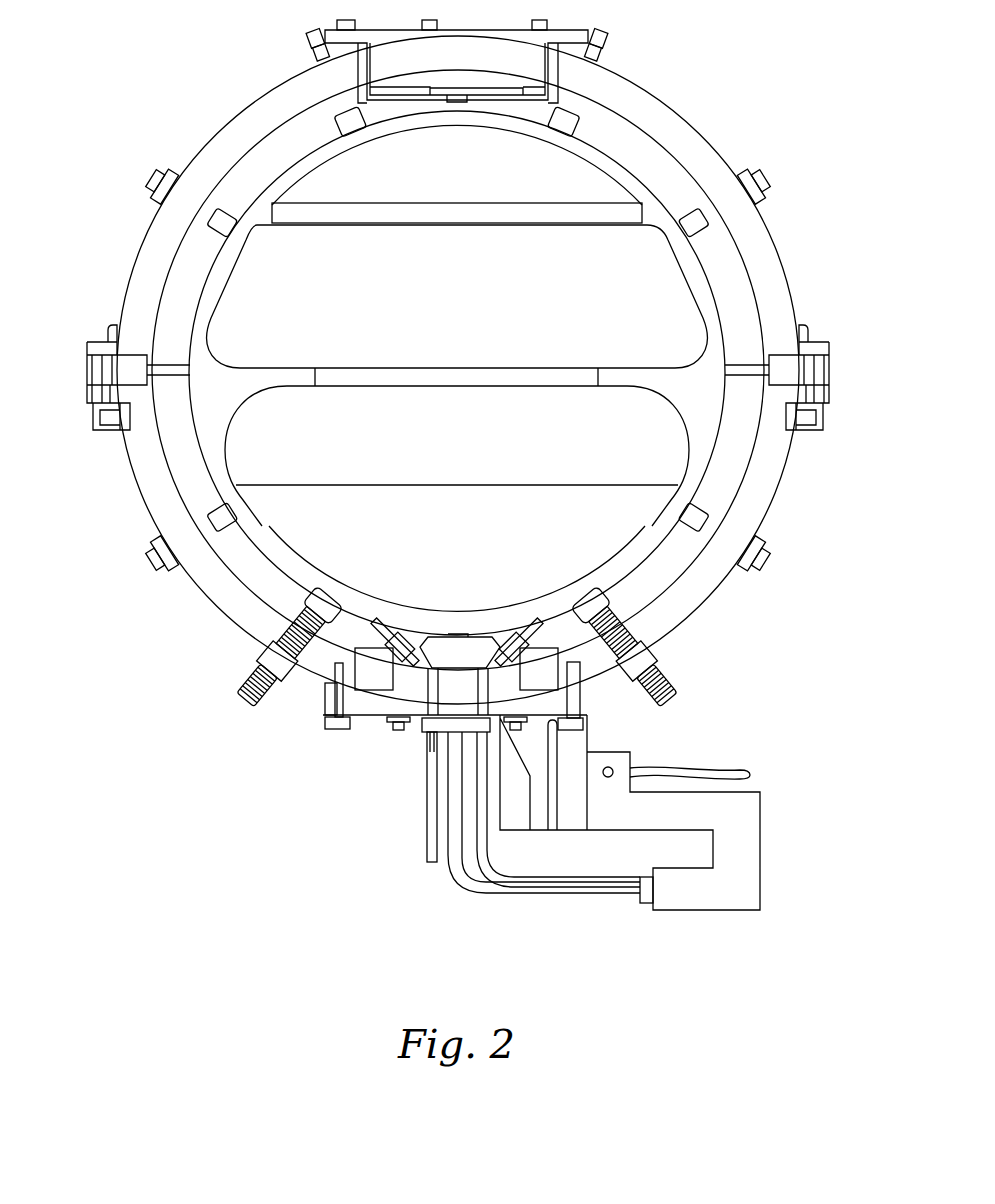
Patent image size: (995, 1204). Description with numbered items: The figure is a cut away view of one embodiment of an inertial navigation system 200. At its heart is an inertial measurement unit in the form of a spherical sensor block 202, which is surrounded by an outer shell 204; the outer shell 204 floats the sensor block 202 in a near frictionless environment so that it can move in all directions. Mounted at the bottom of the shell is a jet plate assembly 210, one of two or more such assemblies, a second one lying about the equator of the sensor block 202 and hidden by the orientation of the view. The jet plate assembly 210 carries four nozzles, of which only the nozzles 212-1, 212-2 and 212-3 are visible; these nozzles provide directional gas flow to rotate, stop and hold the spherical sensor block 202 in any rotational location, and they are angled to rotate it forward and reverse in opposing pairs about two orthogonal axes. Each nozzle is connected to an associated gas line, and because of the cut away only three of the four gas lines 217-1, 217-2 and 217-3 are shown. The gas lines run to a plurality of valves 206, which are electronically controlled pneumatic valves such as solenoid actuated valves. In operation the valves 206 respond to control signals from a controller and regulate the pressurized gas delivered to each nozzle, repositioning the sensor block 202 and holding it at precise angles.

The inertial navigation system 200 is at (128, 828).
The spherical sensor block 202 is at (718, 290).
The outer shell 204 is at (720, 160).
The valves 206 is at (760, 868).
The jet plate assembly 210 is at (398, 705).
The nozzle 212-1 is at (572, 672).
The nozzle 212-2 is at (365, 668).
The nozzle 212-3 is at (462, 637).
The gas line 217-1 is at (427, 757).
The gas line 217-2 is at (450, 785).
The gas line 217-3 is at (477, 843).